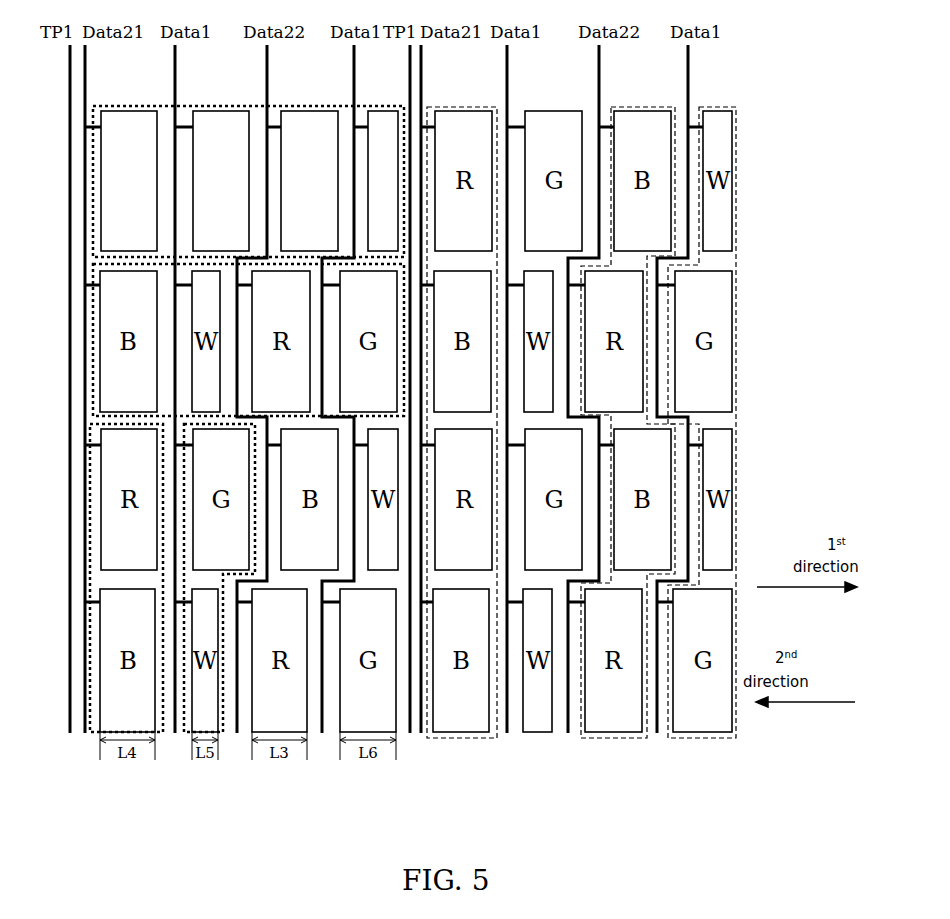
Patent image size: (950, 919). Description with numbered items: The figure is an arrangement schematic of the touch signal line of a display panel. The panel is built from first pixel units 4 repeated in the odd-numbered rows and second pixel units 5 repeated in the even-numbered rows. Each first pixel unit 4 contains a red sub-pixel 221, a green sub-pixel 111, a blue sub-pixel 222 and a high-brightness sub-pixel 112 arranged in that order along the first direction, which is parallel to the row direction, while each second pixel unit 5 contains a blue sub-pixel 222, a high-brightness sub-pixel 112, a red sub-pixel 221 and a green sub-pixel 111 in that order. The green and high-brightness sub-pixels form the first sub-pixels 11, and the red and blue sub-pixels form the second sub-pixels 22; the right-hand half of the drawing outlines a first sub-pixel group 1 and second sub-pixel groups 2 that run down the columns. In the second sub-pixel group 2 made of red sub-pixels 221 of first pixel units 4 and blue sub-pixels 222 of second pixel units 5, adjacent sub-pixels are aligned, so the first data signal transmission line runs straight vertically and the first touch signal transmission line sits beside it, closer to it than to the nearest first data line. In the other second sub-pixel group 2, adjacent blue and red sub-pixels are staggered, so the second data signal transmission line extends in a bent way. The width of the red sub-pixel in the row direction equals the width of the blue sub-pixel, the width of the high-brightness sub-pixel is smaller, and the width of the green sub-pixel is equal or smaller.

The first sub-pixel group 1 is at (715, 107).
The second sub-pixel group 2 is at (480, 107).
The first pixel unit 4 is at (93, 141).
The second pixel unit 5 is at (92, 303).
The first sub-pixel 11 is at (185, 718).
The second sub-pixel 22 is at (90, 718).
The green sub-pixel 111 is at (240, 107).
The high-brightness sub-pixel 112 is at (385, 107).
The red sub-pixel 221 is at (147, 107).
The blue sub-pixel 222 is at (320, 107).